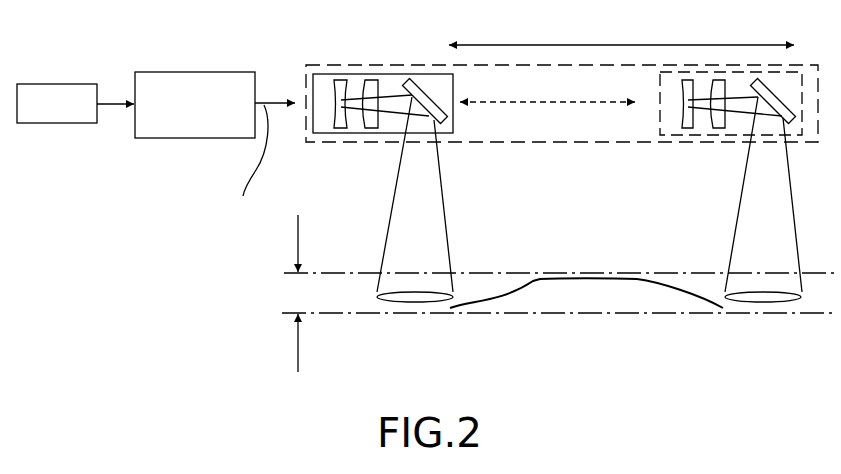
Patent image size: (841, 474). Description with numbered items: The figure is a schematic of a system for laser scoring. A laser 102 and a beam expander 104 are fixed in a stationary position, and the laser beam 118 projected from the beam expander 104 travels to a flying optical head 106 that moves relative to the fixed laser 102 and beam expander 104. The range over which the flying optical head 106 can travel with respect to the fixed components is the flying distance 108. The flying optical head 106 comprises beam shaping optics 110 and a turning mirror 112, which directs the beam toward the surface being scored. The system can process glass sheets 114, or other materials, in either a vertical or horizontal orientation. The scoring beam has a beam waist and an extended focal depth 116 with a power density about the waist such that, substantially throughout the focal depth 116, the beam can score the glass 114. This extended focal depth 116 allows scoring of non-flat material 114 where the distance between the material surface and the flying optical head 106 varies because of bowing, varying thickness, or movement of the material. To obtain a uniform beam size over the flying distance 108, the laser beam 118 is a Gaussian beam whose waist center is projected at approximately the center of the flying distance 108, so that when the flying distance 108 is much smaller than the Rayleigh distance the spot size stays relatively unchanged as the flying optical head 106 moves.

The laser 102 is at (74, 115).
The beam expander 104 is at (212, 113).
The flying optical head 106 is at (333, 73).
The flying distance 108 is at (621, 26).
The beam shaping optics 110 is at (383, 134).
The turning mirror 112 is at (427, 83).
The glass sheet 114 is at (586, 296).
The extended focal depth 116 is at (547, 293).
The laser beam 118 is at (248, 169).